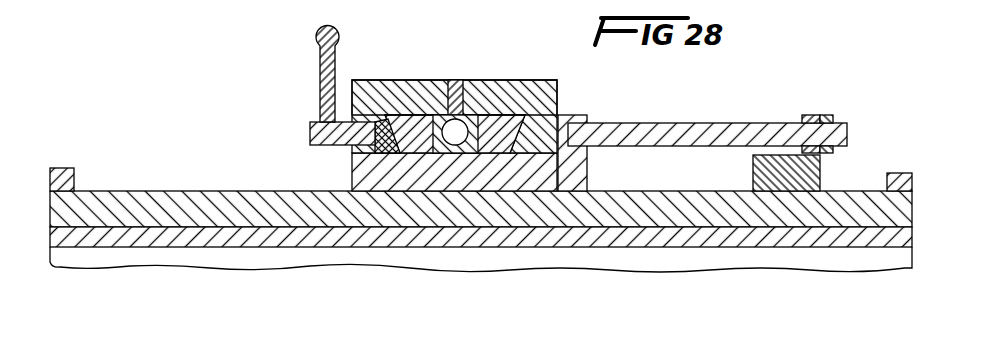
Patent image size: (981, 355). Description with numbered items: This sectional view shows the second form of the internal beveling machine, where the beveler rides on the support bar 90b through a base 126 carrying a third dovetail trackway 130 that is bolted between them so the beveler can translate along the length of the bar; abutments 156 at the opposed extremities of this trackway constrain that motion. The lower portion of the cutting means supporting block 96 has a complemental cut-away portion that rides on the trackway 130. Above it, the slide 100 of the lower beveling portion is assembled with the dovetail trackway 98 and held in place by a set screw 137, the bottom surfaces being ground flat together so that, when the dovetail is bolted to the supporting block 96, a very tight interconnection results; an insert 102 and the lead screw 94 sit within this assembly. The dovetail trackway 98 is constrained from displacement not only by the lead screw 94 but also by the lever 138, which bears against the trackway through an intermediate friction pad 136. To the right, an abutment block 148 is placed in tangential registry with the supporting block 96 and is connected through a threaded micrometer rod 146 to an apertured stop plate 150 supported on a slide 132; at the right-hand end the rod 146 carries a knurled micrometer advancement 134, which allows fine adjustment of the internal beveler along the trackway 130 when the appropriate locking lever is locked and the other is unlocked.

The support bar 90b is at (160, 236).
The base member 126 is at (103, 265).
The third dovetail trackway 130 is at (160, 191).
The abutments 156 is at (62, 168).
The cutting means supporting block 96 is at (356, 168).
The dovetail trackway 98 is at (503, 118).
The slide 100 is at (421, 80).
The set screw 137 is at (457, 80).
The insert block 102 is at (468, 117).
The lead screw 94 is at (452, 150).
The friction pad 136 is at (380, 115).
The lever 138 is at (328, 76).
The abutment block 148 is at (576, 113).
The threaded micrometer rod 146 is at (678, 123).
The apertured stop plate 150 is at (808, 115).
The knurled micrometer advancement 134 is at (832, 116).
The slide 132 is at (760, 170).